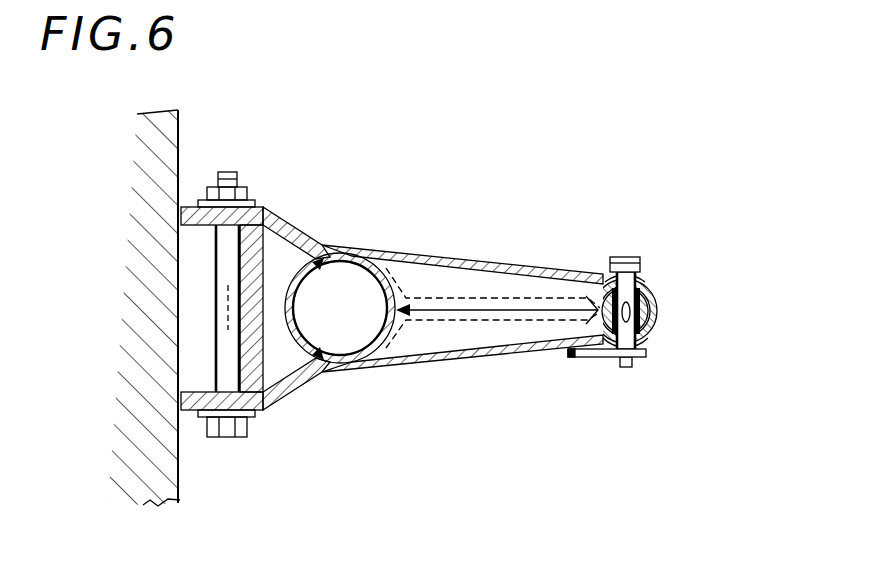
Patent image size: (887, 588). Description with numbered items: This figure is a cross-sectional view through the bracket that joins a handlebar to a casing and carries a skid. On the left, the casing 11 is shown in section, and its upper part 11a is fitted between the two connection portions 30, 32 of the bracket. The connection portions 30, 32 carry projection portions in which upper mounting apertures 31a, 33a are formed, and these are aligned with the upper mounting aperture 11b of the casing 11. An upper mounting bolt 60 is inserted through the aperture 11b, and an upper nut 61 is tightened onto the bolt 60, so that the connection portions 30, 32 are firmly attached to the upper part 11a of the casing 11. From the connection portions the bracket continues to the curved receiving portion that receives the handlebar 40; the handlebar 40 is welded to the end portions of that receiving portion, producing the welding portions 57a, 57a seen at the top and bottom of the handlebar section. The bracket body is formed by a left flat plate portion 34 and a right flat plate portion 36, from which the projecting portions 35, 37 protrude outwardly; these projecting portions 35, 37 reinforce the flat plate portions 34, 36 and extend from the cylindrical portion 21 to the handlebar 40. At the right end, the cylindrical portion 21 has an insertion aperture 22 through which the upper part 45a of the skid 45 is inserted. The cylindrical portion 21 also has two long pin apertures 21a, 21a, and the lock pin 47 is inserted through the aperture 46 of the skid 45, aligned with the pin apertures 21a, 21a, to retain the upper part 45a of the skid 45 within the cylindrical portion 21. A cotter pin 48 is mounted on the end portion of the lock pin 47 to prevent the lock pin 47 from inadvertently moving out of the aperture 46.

The casing 11 is at (145, 157).
The upper part 11a is at (148, 232).
The upper mounting aperture 11b is at (236, 298).
The connection portion 30 is at (193, 412).
The upper mounting aperture 31a is at (227, 437).
The connection portion 32 is at (200, 186).
The upper mounting aperture 33a is at (249, 200).
The upper mounting bolt 60 is at (250, 430).
The upper nut 61 is at (228, 172).
The handlebar 40 is at (296, 254).
The welding portion 57a is at (314, 250).
The projecting portion 37 is at (482, 253).
The projecting portion 35 is at (461, 365).
The right flat plate portion 36 is at (536, 298).
The left flat plate portion 34 is at (523, 322).
The cylindrical portion 21 is at (648, 288).
The pin aperture 21a is at (622, 257).
The insertion aperture 22 is at (642, 278).
The skid 45 is at (655, 316).
The upper part 45a is at (658, 333).
The aperture 46 is at (656, 303).
The lock pin 47 is at (630, 256).
The cotter pin 48 is at (582, 358).